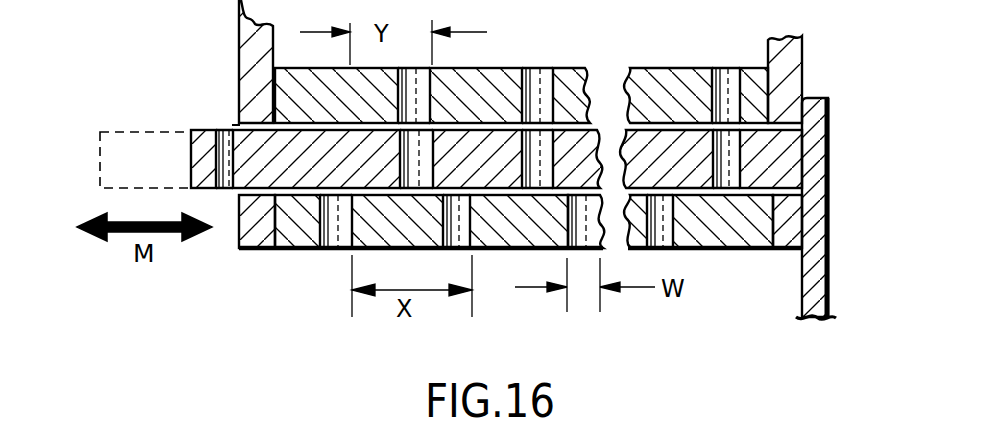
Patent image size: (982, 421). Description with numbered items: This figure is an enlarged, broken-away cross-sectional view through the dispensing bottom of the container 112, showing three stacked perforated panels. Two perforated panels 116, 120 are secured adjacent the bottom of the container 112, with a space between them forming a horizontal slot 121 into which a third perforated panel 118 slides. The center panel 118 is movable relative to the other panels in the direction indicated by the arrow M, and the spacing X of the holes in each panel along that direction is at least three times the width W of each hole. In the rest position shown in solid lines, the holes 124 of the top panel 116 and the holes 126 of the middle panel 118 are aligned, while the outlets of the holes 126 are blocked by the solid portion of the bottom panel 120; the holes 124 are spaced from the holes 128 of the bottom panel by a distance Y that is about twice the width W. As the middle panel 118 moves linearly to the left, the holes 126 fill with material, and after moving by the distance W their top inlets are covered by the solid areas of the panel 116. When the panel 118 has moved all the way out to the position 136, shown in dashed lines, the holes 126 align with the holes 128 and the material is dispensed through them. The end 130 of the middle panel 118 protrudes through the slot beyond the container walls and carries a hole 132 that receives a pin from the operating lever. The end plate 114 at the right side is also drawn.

The container 112 is at (240, 31).
The end plate 114 is at (832, 258).
The perforated panel 116 is at (673, 67).
The center panel 118 is at (780, 152).
The perforated panel 120 is at (297, 250).
The horizontal slot 121 is at (236, 125).
The holes 124 is at (432, 72).
The holes 126 is at (545, 152).
The holes 128 is at (343, 250).
The end 130 is at (238, 127).
The hole 132 is at (218, 190).
The position 136 is at (100, 134).